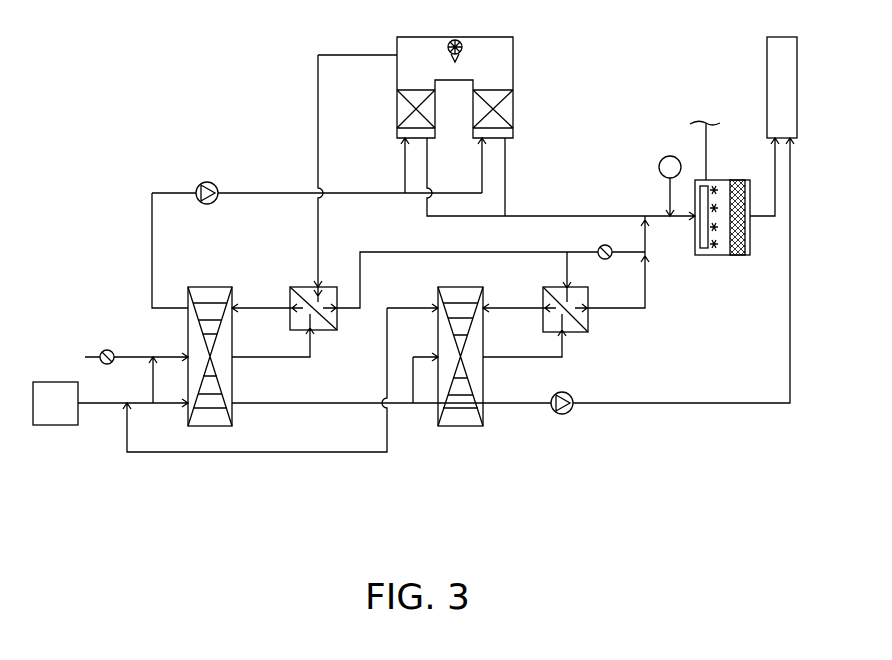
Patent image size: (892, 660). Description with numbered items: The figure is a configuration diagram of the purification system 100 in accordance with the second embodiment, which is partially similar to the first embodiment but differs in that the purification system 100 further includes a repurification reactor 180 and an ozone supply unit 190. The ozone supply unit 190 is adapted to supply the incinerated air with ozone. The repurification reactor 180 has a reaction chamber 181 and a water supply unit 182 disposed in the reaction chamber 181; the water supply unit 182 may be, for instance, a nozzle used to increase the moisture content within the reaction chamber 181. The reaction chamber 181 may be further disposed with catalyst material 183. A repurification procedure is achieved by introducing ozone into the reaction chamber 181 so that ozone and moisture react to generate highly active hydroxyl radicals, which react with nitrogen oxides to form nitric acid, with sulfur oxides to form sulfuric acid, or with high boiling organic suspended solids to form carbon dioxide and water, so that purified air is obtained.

The purification system 100 is at (116, 25).
The repurification reactor 180 is at (732, 165).
The reaction chamber 181 is at (722, 246).
The water supply unit 182 is at (699, 250).
The catalyst material 183 is at (742, 256).
The ozone supply unit 190 is at (668, 156).